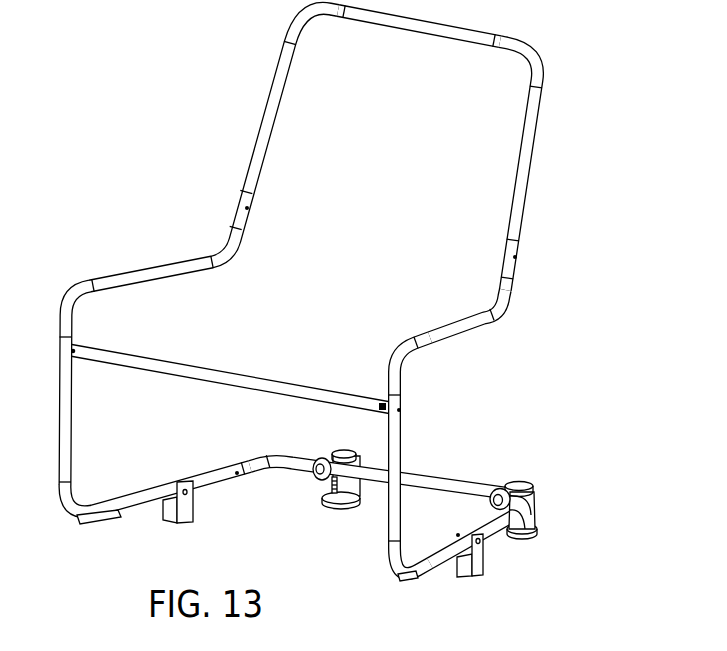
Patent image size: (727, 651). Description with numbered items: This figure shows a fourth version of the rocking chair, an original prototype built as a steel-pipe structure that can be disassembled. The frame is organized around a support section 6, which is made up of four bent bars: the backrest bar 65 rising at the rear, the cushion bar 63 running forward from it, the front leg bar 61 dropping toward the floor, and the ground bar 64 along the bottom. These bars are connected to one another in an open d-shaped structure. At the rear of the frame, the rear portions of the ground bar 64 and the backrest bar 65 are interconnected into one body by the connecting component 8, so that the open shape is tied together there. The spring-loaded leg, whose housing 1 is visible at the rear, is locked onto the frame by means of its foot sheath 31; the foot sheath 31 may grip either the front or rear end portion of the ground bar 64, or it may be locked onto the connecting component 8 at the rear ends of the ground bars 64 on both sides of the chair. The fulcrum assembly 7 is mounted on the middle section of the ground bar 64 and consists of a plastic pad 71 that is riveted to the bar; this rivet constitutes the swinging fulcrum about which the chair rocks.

The housing 1 is at (550, 486).
The support section 6 is at (198, 266).
The fulcrum assembly 7 is at (508, 586).
The connecting component 8 is at (381, 248).
The foot sheath 31 is at (518, 470).
The front leg bar 61 is at (376, 459).
The cushion bar 63 is at (439, 307).
The ground bar 64 is at (475, 531).
The backrest bar 65 is at (485, 166).
The plastic pad 71 is at (517, 571).